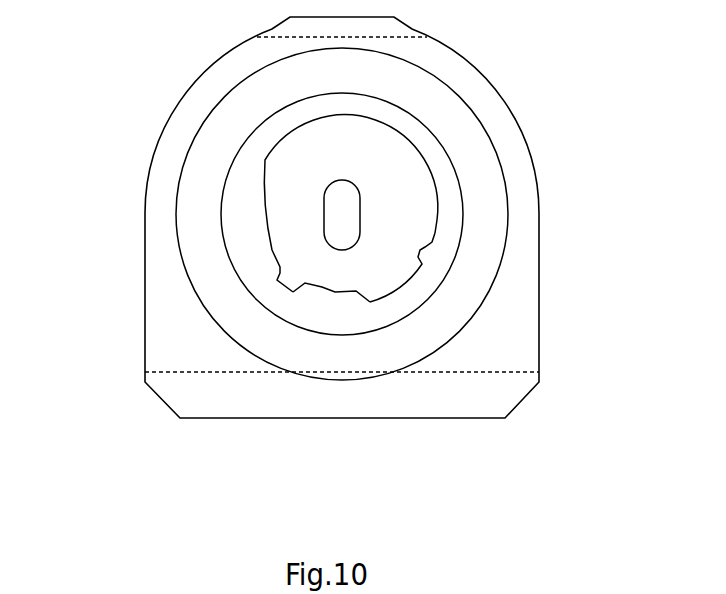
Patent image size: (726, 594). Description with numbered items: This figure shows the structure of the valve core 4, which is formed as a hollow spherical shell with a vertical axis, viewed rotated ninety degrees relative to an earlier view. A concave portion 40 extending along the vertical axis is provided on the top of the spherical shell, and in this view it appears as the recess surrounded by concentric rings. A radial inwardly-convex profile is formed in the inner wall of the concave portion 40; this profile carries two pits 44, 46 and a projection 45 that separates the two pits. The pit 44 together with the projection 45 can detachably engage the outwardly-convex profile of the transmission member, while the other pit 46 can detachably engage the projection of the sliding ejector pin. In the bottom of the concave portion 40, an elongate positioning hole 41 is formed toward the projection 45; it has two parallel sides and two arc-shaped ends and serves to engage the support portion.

The valve core 4 is at (390, 125).
The concave portion 40 is at (397, 212).
The elongate positioning hole 41 is at (348, 200).
The pit 44 is at (402, 276).
The projection 45 is at (333, 291).
The pit 46 is at (278, 282).